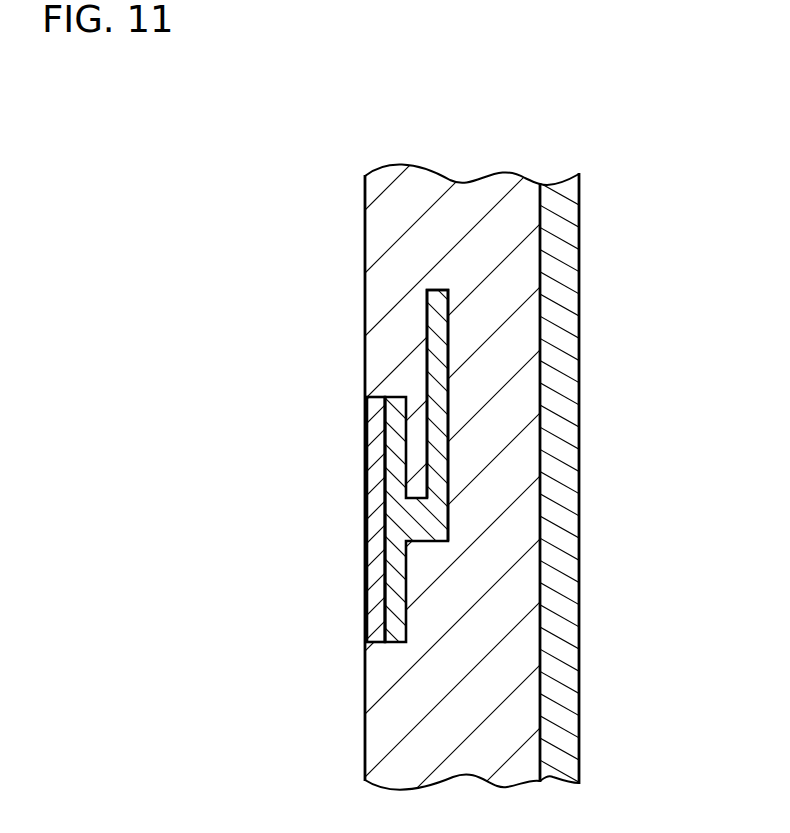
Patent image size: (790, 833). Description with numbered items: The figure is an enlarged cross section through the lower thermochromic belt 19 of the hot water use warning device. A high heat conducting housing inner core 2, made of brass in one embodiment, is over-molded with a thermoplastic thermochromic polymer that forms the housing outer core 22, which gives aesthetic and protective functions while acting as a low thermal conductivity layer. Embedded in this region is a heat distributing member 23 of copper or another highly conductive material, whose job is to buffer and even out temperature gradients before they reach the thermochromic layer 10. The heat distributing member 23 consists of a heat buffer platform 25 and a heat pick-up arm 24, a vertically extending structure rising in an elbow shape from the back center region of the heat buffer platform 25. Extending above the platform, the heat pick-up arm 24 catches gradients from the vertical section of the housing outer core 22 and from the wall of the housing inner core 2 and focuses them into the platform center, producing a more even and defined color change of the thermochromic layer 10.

The housing inner core 2 is at (558, 428).
The thermochromic layer 10 is at (372, 460).
The lower thermochromic belt 19 is at (342, 515).
The housing outer core 22 is at (472, 711).
The heat distributing member 23 is at (463, 520).
The heat pick-up arm 24 is at (450, 395).
The heat buffer platform 25 is at (392, 596).